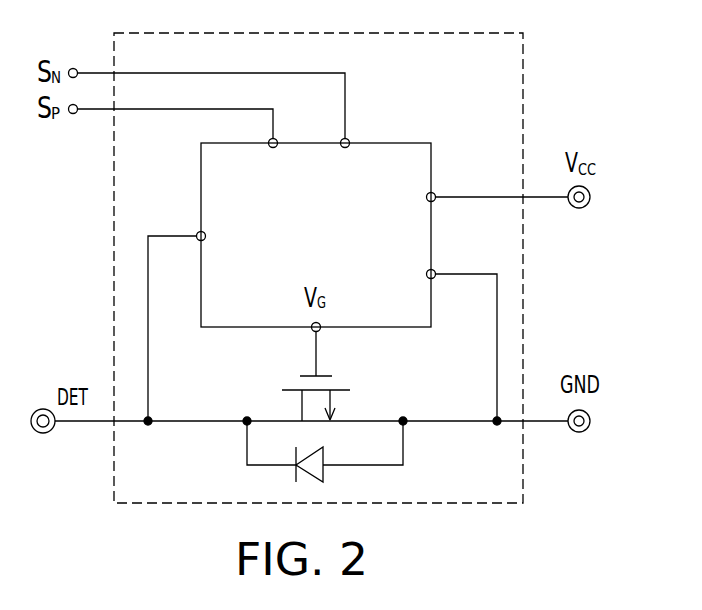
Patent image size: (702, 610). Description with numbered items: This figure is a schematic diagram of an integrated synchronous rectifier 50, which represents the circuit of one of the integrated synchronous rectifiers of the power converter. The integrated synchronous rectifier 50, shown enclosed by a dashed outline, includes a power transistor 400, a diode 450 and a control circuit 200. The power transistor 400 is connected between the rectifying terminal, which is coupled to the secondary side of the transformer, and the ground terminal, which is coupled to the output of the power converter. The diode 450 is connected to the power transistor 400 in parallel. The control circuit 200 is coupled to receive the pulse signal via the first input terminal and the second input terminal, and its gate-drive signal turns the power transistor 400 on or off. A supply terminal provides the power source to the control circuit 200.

The integrated synchronous rectifier 50 is at (495, 63).
The control circuit 200 is at (388, 164).
The power transistor 400 is at (343, 404).
The diode 450 is at (284, 454).